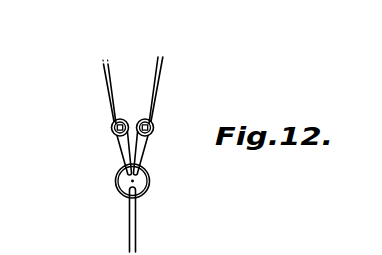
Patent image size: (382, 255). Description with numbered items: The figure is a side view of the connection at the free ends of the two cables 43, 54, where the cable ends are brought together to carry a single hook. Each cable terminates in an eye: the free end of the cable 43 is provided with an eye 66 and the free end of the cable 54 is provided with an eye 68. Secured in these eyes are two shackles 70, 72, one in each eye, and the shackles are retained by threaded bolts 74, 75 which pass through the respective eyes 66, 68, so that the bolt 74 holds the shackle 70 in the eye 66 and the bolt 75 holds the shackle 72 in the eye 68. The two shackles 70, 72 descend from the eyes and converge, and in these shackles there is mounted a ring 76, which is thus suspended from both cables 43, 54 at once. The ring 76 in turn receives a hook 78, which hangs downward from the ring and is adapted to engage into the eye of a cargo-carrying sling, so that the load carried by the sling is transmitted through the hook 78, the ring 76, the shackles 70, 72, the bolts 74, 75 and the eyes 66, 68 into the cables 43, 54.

The cable 43 is at (108, 93).
The cable 54 is at (162, 83).
The eye 66 is at (112, 123).
The eye 68 is at (160, 114).
The threaded bolt 74 is at (112, 134).
The threaded bolt 75 is at (154, 132).
The shackle 70 is at (119, 162).
The shackle 72 is at (142, 160).
The ring 76 is at (150, 195).
The hook 78 is at (136, 235).